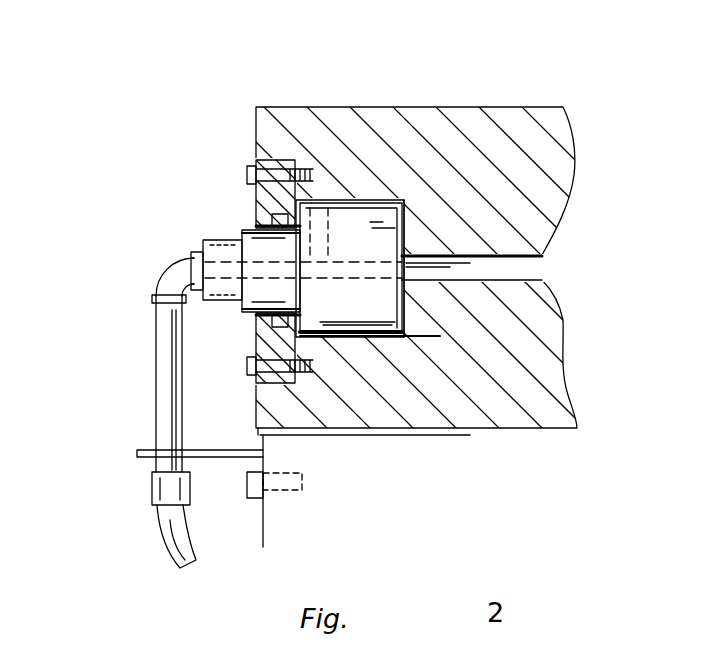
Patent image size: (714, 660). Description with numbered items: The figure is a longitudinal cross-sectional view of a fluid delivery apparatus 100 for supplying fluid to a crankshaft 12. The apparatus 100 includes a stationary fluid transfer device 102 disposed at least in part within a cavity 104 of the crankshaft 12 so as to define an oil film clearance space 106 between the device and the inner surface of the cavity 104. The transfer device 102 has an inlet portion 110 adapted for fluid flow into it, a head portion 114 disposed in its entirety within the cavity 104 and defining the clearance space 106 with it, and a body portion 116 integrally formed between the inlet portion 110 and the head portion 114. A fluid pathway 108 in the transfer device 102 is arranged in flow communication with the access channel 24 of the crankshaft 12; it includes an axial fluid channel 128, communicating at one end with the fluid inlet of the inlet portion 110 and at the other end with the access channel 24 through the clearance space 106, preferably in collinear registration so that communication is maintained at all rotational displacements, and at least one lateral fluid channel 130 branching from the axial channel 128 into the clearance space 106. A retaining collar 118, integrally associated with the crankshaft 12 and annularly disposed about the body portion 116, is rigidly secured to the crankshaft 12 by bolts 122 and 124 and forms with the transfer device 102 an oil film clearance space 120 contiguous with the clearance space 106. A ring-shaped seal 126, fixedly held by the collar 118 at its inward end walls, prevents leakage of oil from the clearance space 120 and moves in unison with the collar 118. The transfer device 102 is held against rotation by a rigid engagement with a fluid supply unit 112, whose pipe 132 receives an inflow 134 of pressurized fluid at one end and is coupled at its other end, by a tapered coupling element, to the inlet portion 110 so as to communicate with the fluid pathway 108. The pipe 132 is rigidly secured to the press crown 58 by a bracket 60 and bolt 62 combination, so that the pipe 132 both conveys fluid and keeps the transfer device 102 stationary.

The crankshaft 12 is at (552, 125).
The access channel 24 is at (533, 268).
The press crown 58 is at (433, 506).
The bracket 60 is at (140, 457).
The bolt 62 is at (282, 490).
The fluid delivery apparatus 100 is at (190, 217).
The stationary fluid transfer device 102 is at (228, 228).
The cavity 104 is at (416, 229).
The oil film clearance space 106 is at (410, 200).
The fluid pathway 108 is at (347, 240).
The inlet portion 110 is at (188, 241).
The fluid supply unit 112 is at (113, 365).
The head portion 114 is at (370, 310).
The body portion 116 is at (257, 295).
The retaining collar 118 is at (280, 223).
The oil film clearance space 120 is at (328, 203).
The bolt 122 is at (248, 369).
The bolt 124 is at (248, 172).
The seal 126 is at (273, 212).
The axial fluid channel 128 is at (352, 273).
The lateral fluid channel 130 is at (358, 200).
The pipe 132 is at (165, 393).
The inflow 134 is at (194, 570).